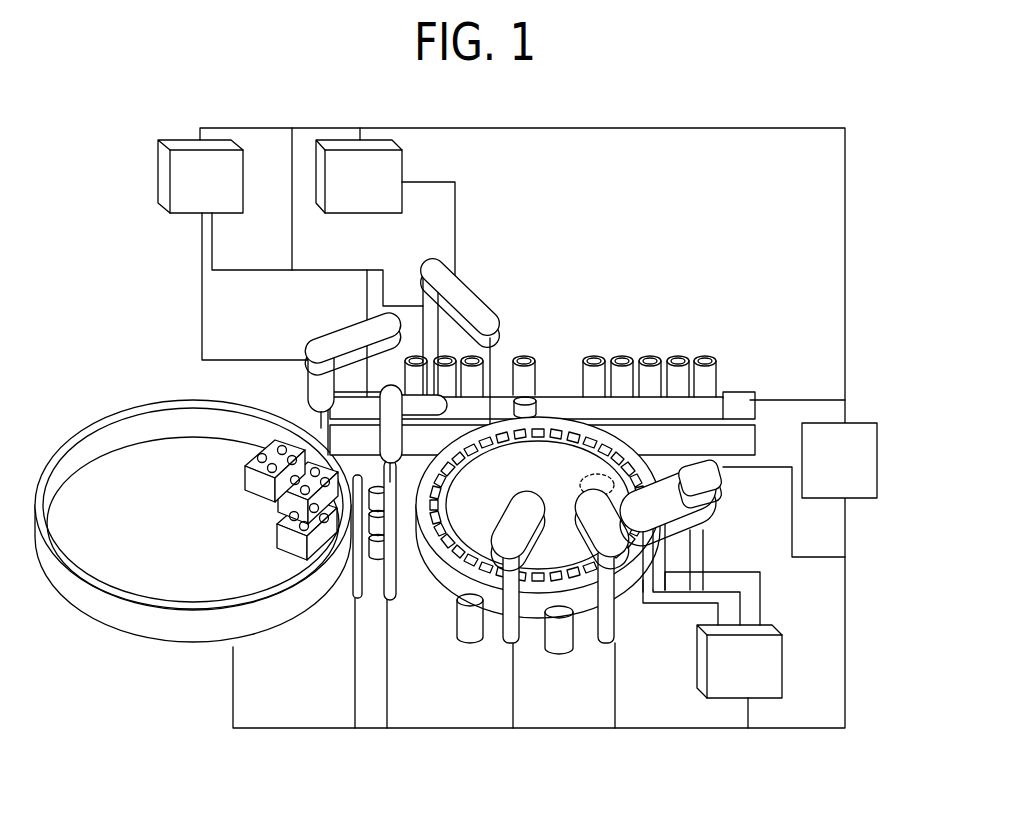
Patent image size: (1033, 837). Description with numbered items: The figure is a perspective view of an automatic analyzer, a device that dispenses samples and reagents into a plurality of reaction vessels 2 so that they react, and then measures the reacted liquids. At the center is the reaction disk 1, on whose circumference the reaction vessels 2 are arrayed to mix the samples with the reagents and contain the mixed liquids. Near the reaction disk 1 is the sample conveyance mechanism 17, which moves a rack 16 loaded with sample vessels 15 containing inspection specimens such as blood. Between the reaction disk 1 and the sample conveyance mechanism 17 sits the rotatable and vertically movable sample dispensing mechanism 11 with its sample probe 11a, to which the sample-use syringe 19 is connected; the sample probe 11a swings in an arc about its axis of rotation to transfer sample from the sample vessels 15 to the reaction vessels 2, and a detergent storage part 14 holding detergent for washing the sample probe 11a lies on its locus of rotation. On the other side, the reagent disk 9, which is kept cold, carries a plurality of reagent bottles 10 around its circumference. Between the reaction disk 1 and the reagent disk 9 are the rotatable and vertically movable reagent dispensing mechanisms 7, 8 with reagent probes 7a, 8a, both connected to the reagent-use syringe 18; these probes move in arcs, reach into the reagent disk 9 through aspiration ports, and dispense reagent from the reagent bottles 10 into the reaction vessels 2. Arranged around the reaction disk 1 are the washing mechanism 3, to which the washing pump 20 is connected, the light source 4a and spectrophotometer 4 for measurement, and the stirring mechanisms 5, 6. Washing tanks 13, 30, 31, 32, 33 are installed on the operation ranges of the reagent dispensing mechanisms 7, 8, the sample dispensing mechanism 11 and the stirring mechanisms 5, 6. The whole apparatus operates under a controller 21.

The reaction disk 1 is at (428, 590).
The reaction vessels 2 is at (455, 592).
The washing mechanism 3 is at (712, 525).
The spectrophotometer 4 is at (712, 478).
The light source 4a is at (603, 472).
The stirring mechanism 5 is at (512, 645).
The stirring mechanism 6 is at (623, 626).
The reagent dispensing mechanism 7 is at (388, 600).
The reagent probe 7a is at (385, 470).
The reagent dispensing mechanism 8 is at (338, 338).
The reagent probe 8a is at (320, 408).
The reagent disk 9 is at (165, 405).
The reagent bottles 10 is at (270, 524).
The sample dispensing mechanism 11 is at (432, 275).
The sample probe 11a is at (476, 362).
The washing tank 13 is at (515, 392).
The detergent storage part 14 is at (528, 410).
The sample vessels 15 is at (715, 375).
The rack 16 is at (712, 412).
The sample conveyance mechanism 17 is at (715, 440).
The reagent-use syringe 18 is at (203, 173).
The sample-use syringe 19 is at (318, 184).
The washing pump 20 is at (762, 666).
The controller 21 is at (866, 475).
The washing tank 30 is at (560, 652).
The washing tank 31 is at (472, 640).
The washing tank 32 is at (360, 590).
The washing tank 33 is at (362, 478).